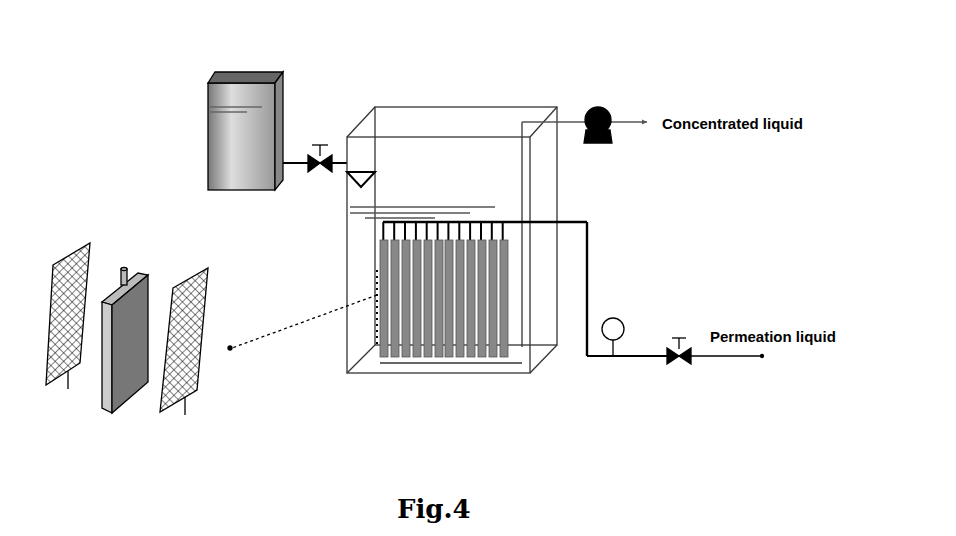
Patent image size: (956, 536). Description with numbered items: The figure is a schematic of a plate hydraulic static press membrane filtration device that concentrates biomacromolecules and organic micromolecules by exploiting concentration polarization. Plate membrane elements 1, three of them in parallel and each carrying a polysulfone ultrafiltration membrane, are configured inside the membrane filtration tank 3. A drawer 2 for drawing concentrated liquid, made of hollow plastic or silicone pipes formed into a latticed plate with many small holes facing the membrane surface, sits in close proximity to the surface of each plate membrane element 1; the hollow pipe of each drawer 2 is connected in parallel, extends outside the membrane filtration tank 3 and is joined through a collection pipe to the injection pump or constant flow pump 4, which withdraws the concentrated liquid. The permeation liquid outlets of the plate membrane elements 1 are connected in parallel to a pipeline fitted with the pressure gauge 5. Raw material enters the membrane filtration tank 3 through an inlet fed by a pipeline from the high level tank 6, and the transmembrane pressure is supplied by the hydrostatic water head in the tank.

The plate membrane element 1 is at (102, 407).
The drawer for drawing concentrated liquid 2 is at (192, 277).
The membrane filtration tank 3 is at (433, 123).
The injection pump or constant flow pump 4 is at (595, 102).
The pressure gauge 5 is at (620, 317).
The high level tank 6 is at (202, 112).